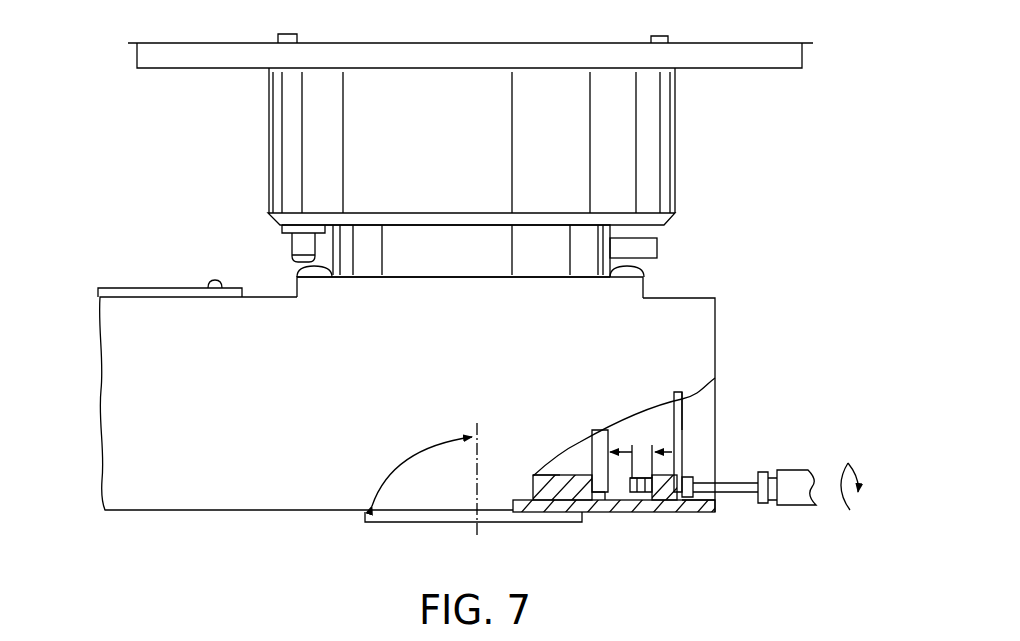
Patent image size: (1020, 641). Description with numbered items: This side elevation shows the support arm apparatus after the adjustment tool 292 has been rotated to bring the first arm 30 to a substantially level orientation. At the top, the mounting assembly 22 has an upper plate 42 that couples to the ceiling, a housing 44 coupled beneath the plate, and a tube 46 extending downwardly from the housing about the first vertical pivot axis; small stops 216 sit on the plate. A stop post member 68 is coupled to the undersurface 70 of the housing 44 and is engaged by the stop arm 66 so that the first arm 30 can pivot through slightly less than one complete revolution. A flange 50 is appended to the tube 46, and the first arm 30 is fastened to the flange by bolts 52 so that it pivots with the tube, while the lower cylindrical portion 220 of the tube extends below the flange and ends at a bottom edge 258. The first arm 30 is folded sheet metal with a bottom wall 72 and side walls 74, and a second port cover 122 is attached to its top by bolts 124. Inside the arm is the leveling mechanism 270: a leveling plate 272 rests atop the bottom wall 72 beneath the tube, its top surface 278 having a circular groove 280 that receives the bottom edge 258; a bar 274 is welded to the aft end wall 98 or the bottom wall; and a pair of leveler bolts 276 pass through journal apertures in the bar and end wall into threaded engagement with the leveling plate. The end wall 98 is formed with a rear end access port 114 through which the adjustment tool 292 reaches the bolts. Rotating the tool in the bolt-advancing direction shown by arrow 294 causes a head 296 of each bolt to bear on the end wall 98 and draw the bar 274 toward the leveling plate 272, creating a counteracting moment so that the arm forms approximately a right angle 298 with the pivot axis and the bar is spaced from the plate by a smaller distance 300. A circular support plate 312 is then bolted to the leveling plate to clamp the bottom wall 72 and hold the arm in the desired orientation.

The upper plate 42 is at (169, 52).
The stop 216 is at (292, 34).
The housing 44 is at (267, 140).
The mounting assembly 22 is at (694, 150).
The undersurface 70 is at (645, 228).
The stop post member 68 is at (294, 244).
The tube 46 is at (410, 255).
The stop arm 66 is at (653, 248).
The bolts 52 is at (304, 268).
The flange 50 is at (628, 290).
The second port cover 122 is at (147, 289).
The bolts 124 is at (214, 282).
The first arm 30 is at (81, 290).
The side walls 74 is at (127, 487).
The circular support plate 312 is at (458, 523).
The right angle 298 is at (401, 453).
The bottom wall 72 is at (699, 512).
The leveling plate 272 is at (548, 478).
The top surface 278 is at (556, 482).
The lower cylindrical portion 220 is at (598, 475).
The leveler bolts 276 is at (652, 481).
The bottom edge 258 is at (598, 497).
The bar 274 is at (665, 503).
The circular groove 280 is at (602, 496).
The leveling mechanism 270 is at (665, 418).
The aft end wall 98 is at (700, 390).
The rear end access port 114 is at (690, 412).
The distance 300 is at (672, 452).
The head 296 is at (693, 480).
The adjustment tool 292 is at (792, 483).
The arrow 294 is at (852, 460).